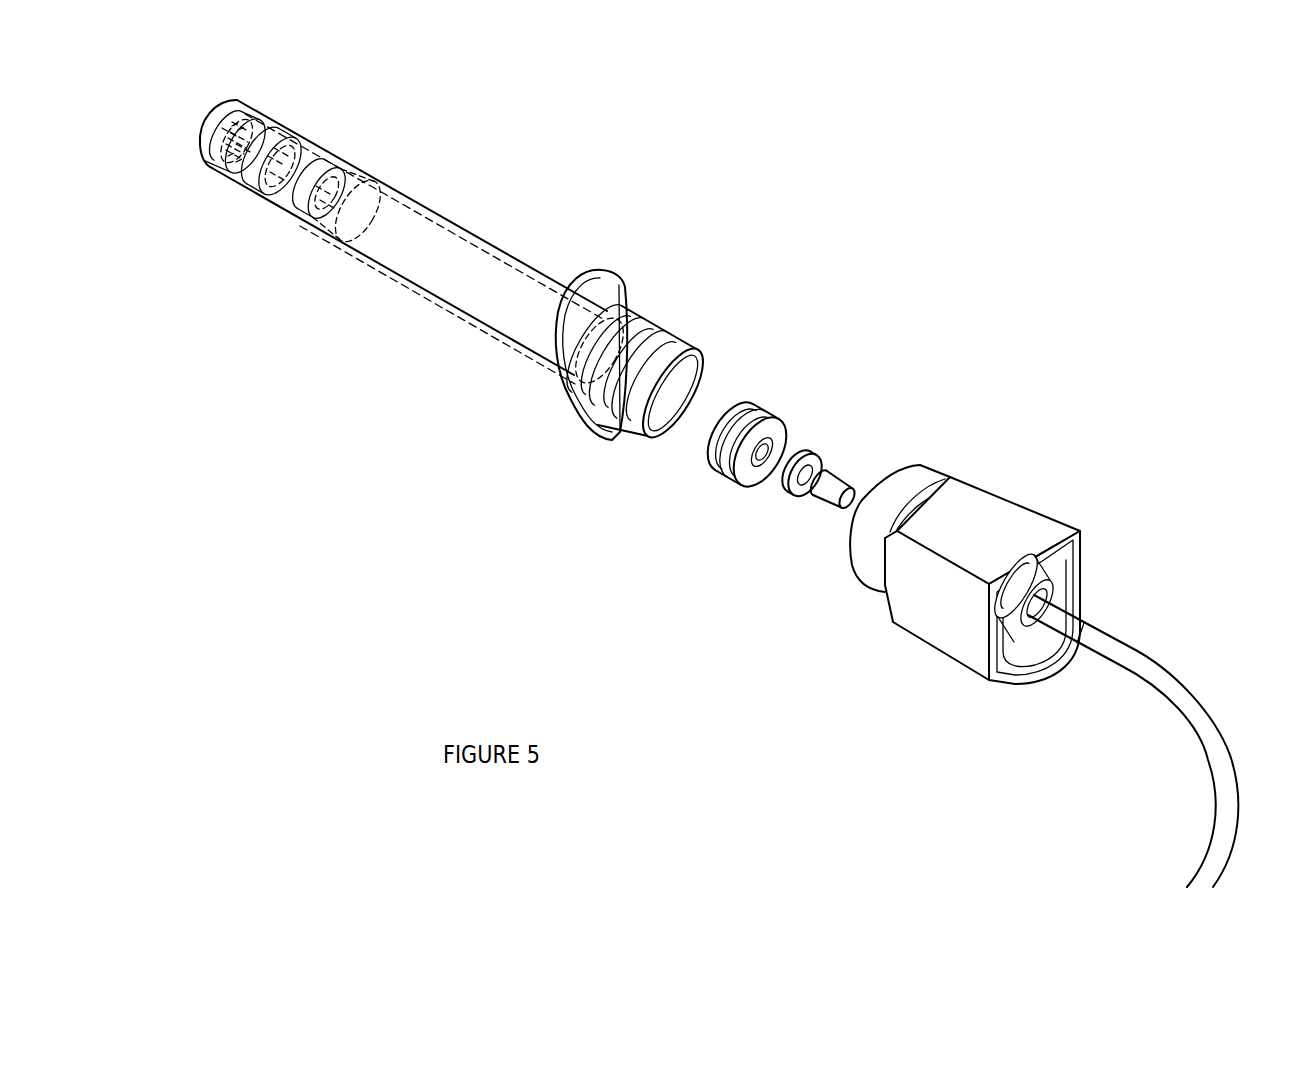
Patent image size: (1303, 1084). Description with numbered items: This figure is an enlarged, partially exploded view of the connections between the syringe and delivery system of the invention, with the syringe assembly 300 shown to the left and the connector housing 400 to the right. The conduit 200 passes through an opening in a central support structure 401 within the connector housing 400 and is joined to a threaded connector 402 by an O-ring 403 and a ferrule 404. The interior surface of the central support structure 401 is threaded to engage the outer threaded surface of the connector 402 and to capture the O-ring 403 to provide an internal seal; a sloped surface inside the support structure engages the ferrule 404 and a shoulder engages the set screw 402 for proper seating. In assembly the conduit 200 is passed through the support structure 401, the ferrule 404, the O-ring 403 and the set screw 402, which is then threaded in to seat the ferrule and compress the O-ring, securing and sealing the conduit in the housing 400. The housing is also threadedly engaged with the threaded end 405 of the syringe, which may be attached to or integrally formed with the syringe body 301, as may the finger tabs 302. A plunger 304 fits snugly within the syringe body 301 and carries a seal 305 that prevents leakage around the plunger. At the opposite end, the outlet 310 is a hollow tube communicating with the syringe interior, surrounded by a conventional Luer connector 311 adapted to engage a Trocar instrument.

The conduit 200 is at (1133, 647).
The probe assembly 300 is at (505, 247).
The syringe body 301 is at (457, 220).
The finger tabs 302 is at (613, 270).
The plunger 304 is at (350, 197).
The seal 305 is at (297, 203).
The outlet 310 is at (240, 173).
The Luer connector 311 is at (265, 122).
The connector housing 400 is at (961, 461).
The central support structure 401 is at (1036, 580).
The threaded connector 402 is at (738, 453).
The O-ring 403 is at (813, 442).
The ferrule 404 is at (845, 467).
The threaded end 405 is at (657, 347).